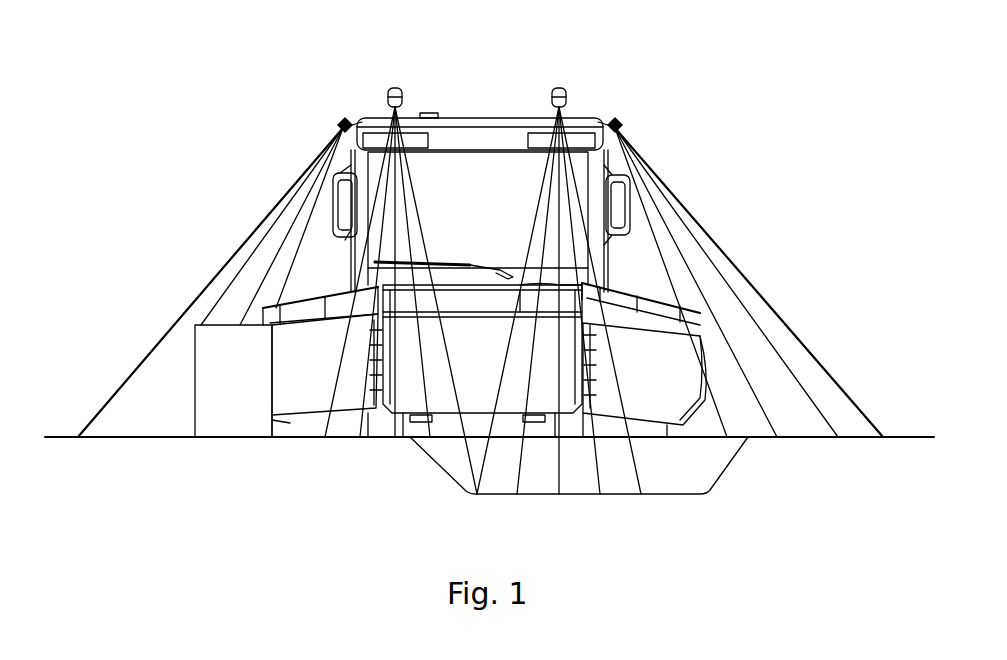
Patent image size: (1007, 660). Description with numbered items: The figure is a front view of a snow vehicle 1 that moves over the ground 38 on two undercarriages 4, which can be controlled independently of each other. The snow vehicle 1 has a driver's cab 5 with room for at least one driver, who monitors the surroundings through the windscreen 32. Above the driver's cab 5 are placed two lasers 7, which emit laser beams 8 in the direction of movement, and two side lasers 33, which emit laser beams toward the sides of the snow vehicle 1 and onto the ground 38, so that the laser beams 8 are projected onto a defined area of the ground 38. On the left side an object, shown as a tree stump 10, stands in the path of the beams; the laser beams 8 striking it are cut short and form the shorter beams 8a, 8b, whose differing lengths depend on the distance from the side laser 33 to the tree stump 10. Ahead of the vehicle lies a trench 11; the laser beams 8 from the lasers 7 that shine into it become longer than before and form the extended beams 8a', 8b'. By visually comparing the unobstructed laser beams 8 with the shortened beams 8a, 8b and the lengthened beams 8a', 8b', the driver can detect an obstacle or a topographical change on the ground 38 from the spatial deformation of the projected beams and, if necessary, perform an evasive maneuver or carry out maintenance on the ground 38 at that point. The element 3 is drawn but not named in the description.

The snow vehicle 1 is at (481, 237).
The left side tank 3 is at (297, 402).
The undercarriage 4 is at (678, 425).
The driver's cab 5 is at (580, 118).
The laser 7 is at (398, 88).
The laser beam 8 is at (131, 372).
The laser beam 8a is at (218, 226).
The laser beam 8b is at (239, 226).
The laser beam 8a' is at (399, 303).
The laser beam 8b' is at (436, 317).
The tree stump 10 is at (195, 398).
The trench 11 is at (702, 496).
The windscreen 32 is at (478, 210).
The side laser 33 is at (338, 122).
The ground 38 is at (901, 430).